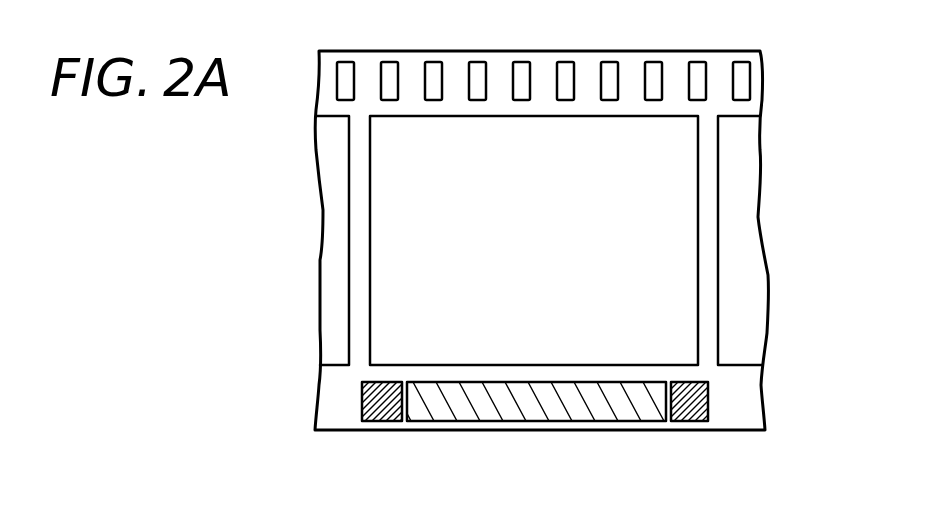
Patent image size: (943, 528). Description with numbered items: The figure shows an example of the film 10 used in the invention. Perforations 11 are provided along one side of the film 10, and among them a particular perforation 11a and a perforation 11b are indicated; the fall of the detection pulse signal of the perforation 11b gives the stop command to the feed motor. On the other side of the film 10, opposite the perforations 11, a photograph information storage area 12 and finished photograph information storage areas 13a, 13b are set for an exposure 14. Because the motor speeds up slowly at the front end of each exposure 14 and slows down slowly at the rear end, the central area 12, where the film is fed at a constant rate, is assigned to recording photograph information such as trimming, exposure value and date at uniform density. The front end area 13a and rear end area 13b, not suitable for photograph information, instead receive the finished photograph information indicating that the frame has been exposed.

The film 10 is at (541, 215).
The perforations 11 is at (615, 55).
The sprocket hole 11a is at (349, 50).
The perforation 11b is at (662, 51).
The photograph information storage area 12 is at (538, 432).
The finished photograph information storage area 13a is at (384, 435).
The finished photograph information storage area 13b is at (690, 437).
The exposure 14 is at (534, 188).